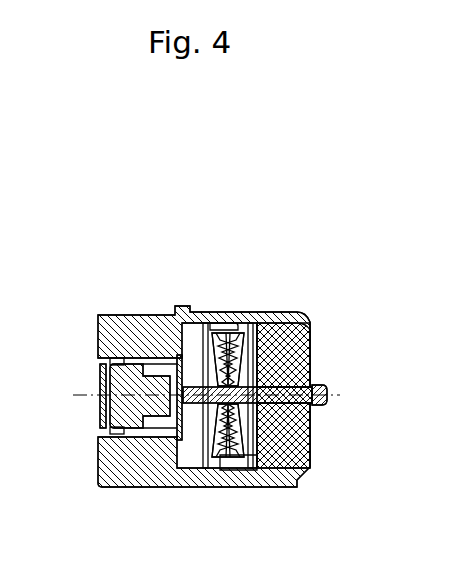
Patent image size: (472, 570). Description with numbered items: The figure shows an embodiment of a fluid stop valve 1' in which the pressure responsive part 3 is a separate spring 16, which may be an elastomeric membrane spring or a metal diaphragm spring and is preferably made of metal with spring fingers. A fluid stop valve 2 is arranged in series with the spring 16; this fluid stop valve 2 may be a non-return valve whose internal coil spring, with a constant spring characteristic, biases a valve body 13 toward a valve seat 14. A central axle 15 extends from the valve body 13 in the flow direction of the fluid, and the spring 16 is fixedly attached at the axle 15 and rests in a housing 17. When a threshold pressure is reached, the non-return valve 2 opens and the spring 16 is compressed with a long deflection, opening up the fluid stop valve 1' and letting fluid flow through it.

The fluid stop valve 1' is at (212, 341).
The fluid stop valve 2 is at (128, 362).
The pressure responsive part 3 is at (242, 352).
The spring 16 is at (242, 352).
The valve body 13 is at (134, 403).
The valve seat 14 is at (103, 362).
The central axle 15 is at (283, 403).
The housing 17 is at (283, 350).